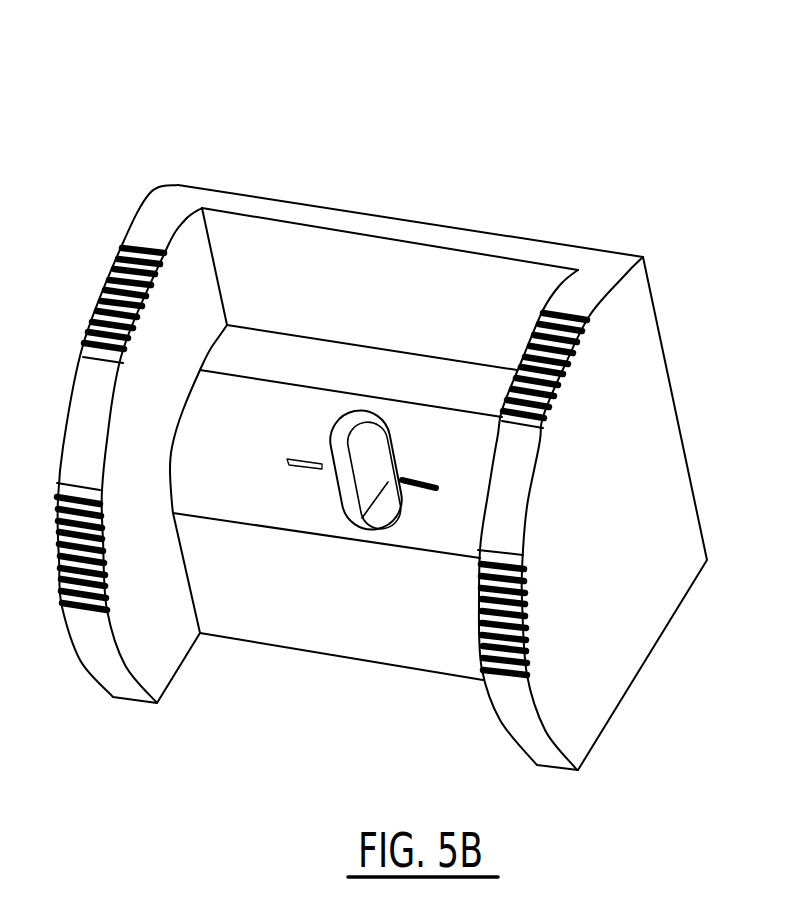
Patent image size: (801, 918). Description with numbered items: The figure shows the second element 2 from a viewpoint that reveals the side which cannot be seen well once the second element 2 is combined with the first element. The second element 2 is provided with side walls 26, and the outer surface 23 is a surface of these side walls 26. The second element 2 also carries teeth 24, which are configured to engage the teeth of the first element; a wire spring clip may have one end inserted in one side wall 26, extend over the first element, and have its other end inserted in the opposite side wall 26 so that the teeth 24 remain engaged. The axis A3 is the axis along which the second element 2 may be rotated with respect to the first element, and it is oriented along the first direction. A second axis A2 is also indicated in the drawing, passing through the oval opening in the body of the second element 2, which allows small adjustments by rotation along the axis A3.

The second element 2 is at (487, 140).
The outer surface 23 is at (80, 423).
The teeth 24 is at (120, 258).
The side wall 26 is at (630, 665).
The slot axis A2 is at (478, 463).
The third axis A3 is at (533, 513).